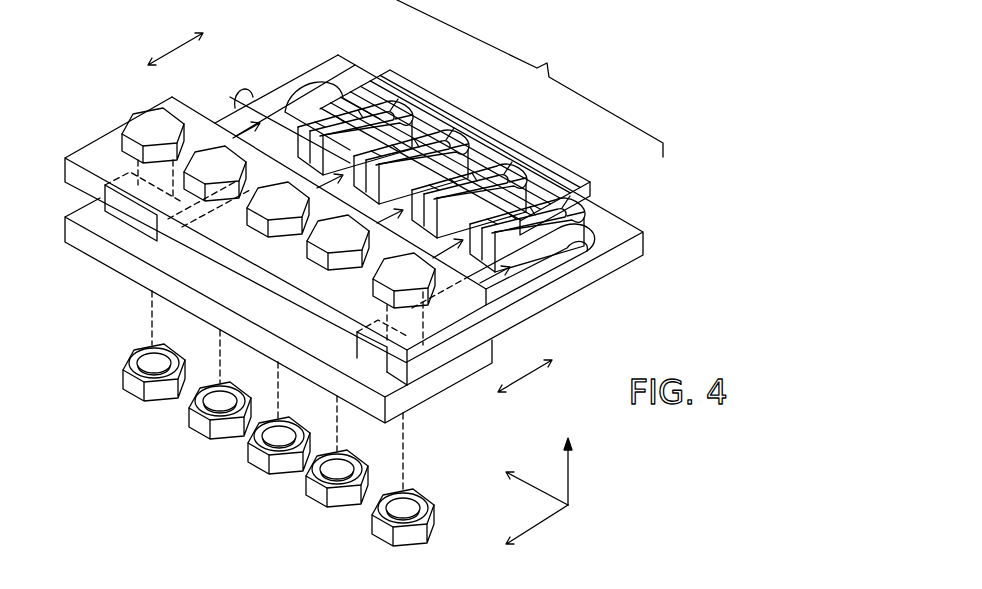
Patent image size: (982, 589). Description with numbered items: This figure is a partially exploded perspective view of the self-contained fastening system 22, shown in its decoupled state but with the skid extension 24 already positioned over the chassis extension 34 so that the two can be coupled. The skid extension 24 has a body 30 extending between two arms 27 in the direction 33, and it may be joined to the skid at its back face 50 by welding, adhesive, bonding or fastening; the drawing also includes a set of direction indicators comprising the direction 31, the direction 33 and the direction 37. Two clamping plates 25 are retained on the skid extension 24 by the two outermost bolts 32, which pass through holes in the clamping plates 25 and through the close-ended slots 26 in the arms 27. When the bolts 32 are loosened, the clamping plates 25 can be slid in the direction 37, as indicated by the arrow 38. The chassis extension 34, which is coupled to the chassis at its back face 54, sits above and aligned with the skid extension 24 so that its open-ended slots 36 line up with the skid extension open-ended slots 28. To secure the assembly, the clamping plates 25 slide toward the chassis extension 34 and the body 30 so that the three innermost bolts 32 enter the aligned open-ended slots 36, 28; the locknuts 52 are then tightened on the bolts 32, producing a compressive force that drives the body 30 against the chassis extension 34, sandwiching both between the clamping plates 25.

The self-contained fastening system 22 is at (625, 62).
The skid extension 24 is at (342, 79).
The clamping plates 25 is at (75, 230).
The close-ended slots 26 is at (285, 126).
The arms 27 is at (257, 107).
The skid extension open-ended slots 28 is at (365, 195).
The body 30 is at (530, 78).
The vertical axis 31 is at (571, 475).
The bolts 32 is at (147, 126).
The direction 33 is at (546, 491).
The chassis extension 34 is at (503, 157).
The chassis extension open-ended slots 36 is at (497, 180).
The direction 37 is at (543, 525).
The arrow 38 is at (178, 48).
The back face 50 is at (636, 235).
The locknuts 52 is at (222, 430).
The back face 54 is at (577, 173).